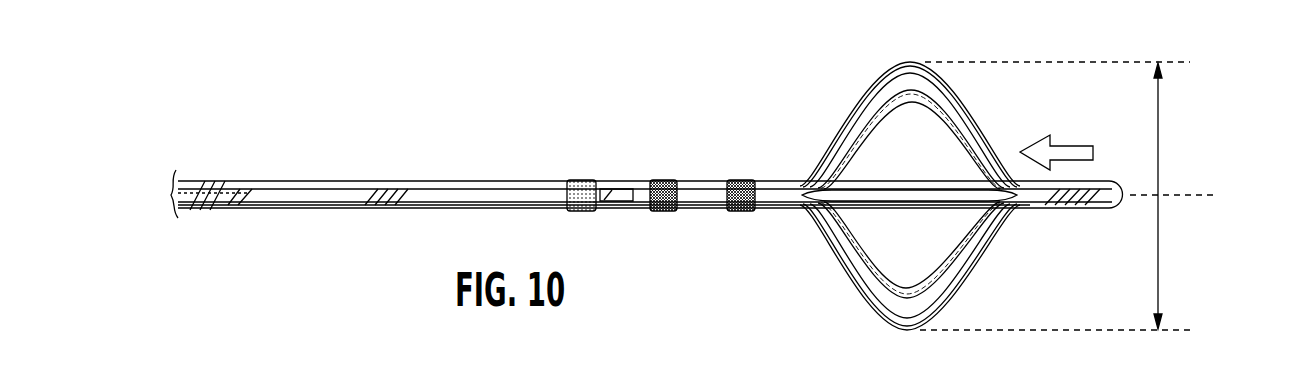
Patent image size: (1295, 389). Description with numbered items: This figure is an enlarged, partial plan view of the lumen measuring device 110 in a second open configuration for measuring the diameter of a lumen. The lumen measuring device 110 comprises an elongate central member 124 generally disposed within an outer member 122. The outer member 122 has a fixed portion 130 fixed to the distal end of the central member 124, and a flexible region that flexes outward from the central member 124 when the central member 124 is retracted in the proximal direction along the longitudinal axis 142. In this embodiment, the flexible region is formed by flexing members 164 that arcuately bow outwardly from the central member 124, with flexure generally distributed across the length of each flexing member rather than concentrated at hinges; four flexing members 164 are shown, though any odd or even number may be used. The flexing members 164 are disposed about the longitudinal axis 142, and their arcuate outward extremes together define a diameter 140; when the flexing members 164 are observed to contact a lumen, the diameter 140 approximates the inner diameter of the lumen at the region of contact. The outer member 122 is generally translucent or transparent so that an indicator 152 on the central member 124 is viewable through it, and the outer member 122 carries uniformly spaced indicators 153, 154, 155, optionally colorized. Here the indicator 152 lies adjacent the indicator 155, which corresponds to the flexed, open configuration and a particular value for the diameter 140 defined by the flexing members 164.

The lumen measuring device 110 is at (1090, 46).
The outer member 122 is at (225, 181).
The elongate central member 124 is at (885, 189).
The fixed portion 130 is at (1093, 183).
The diameter 140 is at (1160, 253).
The longitudinal axis 142 is at (1178, 195).
The indicator 152 is at (615, 190).
The indicator 153 is at (740, 212).
The indicator 154 is at (662, 212).
The indicator 155 is at (578, 212).
The flexing members 164 is at (905, 62).